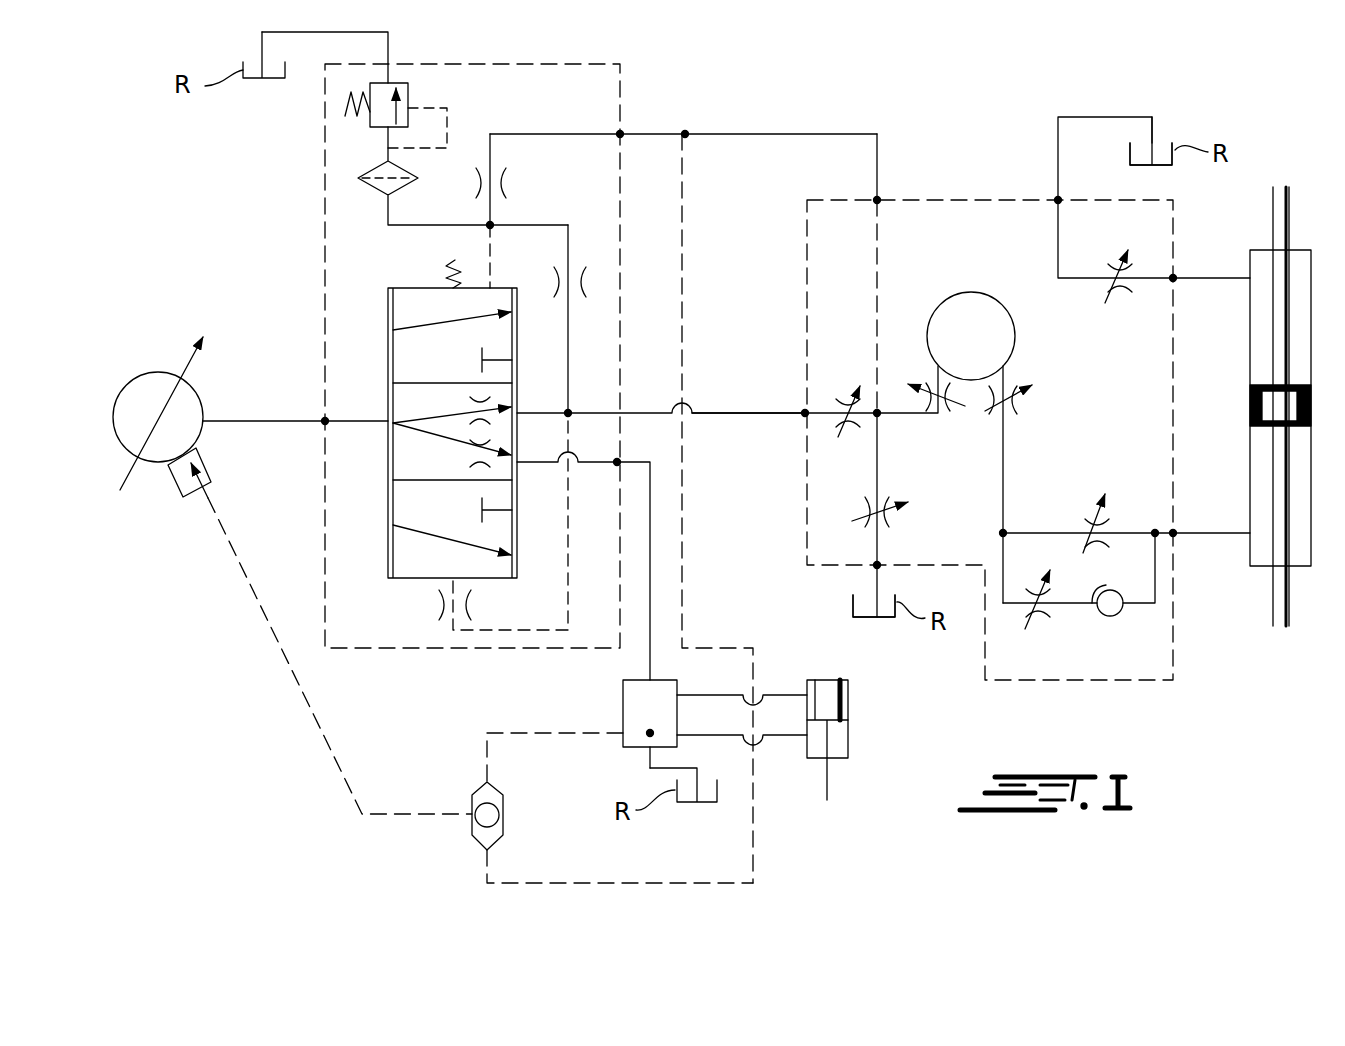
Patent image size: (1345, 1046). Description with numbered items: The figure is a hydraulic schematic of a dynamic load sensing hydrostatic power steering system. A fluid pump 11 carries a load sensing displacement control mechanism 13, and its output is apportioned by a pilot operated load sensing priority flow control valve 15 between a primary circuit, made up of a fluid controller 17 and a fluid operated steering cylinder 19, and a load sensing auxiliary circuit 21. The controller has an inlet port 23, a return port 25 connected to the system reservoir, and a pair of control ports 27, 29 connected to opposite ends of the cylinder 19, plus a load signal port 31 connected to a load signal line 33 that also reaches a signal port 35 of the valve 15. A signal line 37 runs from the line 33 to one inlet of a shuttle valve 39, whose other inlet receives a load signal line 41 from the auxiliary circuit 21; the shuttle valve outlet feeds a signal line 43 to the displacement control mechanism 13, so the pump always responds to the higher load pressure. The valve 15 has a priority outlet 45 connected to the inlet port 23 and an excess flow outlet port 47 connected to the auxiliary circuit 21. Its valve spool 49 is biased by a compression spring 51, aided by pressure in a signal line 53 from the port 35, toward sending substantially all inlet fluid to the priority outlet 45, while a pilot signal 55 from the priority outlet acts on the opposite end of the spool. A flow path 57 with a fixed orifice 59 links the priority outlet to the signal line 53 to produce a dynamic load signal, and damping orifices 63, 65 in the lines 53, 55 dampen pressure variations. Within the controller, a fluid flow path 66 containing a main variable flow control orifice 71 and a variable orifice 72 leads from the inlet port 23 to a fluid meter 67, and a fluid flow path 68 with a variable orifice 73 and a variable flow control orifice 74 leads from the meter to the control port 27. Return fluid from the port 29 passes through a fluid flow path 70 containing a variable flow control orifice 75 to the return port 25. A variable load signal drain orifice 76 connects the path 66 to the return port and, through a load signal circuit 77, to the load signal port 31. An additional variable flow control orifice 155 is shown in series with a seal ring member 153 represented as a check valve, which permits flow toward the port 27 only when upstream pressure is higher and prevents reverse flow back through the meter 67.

The fluid pump 11 is at (164, 370).
The load sensing displacement control mechanism 13 is at (182, 491).
The load sensing priority flow control valve (LSPV) 15 is at (324, 305).
The fluid controller 17 is at (969, 199).
The fluid operated steering cylinder 19 is at (1233, 415).
The load sensing auxiliary circuit 21 is at (622, 751).
The inlet port 23 is at (802, 418).
The return port 25 is at (1057, 200).
The control (cylinder) port 27 is at (1175, 532).
The control (cylinder) port 29 is at (1175, 278).
The load signal port 31 is at (878, 200).
The load signal line 33 is at (738, 134).
The signal port 35 is at (623, 134).
The signal line 37 is at (684, 241).
The shuttle valve 39 is at (479, 789).
The load signal line 41 is at (548, 733).
The signal line 43 is at (272, 635).
The priority outlet 45 is at (624, 412).
The excess flow outlet port 47 is at (619, 462).
The valve spool 49 is at (400, 579).
The compression spring 51 is at (444, 279).
The signal line 53 is at (588, 136).
The pilot signal 55 is at (567, 621).
The flow path 57 is at (567, 372).
The fixed orifice 59 is at (560, 286).
The damping orifice 63 is at (501, 196).
The damping orifice 65 is at (471, 601).
The fluid flow path 66 is at (898, 418).
The fluid meter 67 is at (952, 294).
The fluid flow path 68 is at (1004, 436).
The fluid flow path 70 is at (1057, 229).
The main variable flow control orifice 71 is at (841, 406).
The variable orifice 72 is at (943, 413).
The variable orifice 73 is at (1016, 388).
The variable flow control orifice 74 is at (1108, 512).
The variable flow control orifice 75 is at (1106, 288).
The variable load signal drain orifice 76 is at (879, 531).
The load signal circuit 77 is at (880, 226).
The seal ring member 153 is at (1120, 617).
The additional variable flow control orifice 155 is at (1040, 621).